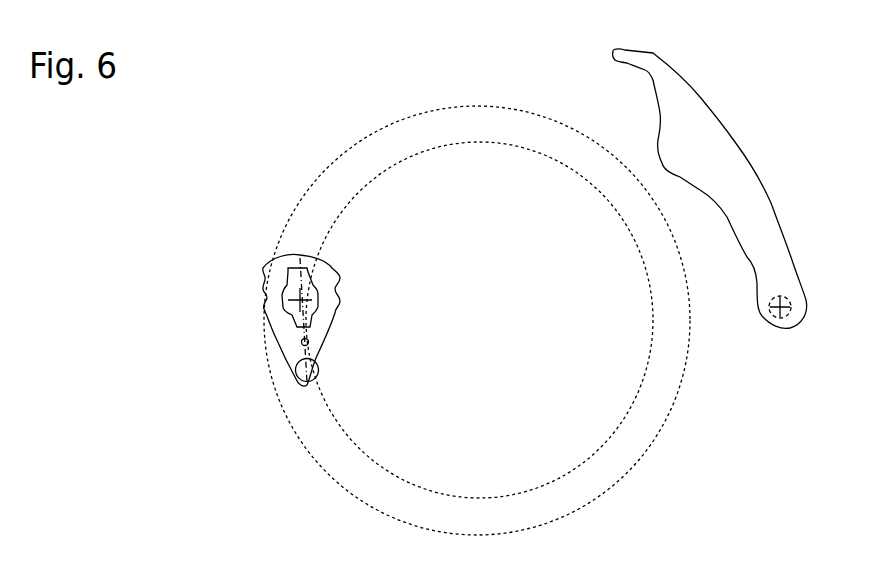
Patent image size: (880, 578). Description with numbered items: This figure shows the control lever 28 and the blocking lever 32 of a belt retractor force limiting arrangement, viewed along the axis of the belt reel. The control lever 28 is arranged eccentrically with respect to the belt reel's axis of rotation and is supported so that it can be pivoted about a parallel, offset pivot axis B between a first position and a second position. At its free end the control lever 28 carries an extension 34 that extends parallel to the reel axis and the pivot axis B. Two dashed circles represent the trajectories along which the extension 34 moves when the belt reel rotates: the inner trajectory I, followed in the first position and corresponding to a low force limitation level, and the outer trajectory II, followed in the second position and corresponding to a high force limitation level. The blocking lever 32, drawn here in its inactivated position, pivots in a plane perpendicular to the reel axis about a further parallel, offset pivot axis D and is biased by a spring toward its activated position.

The control lever 28 is at (277, 267).
The pivot axis B is at (293, 300).
The extension 34 is at (296, 370).
The blocking lever 32 is at (693, 143).
The pivot axis D is at (778, 310).
The inner trajectory I is at (405, 159).
The outer trajectory II is at (460, 107).